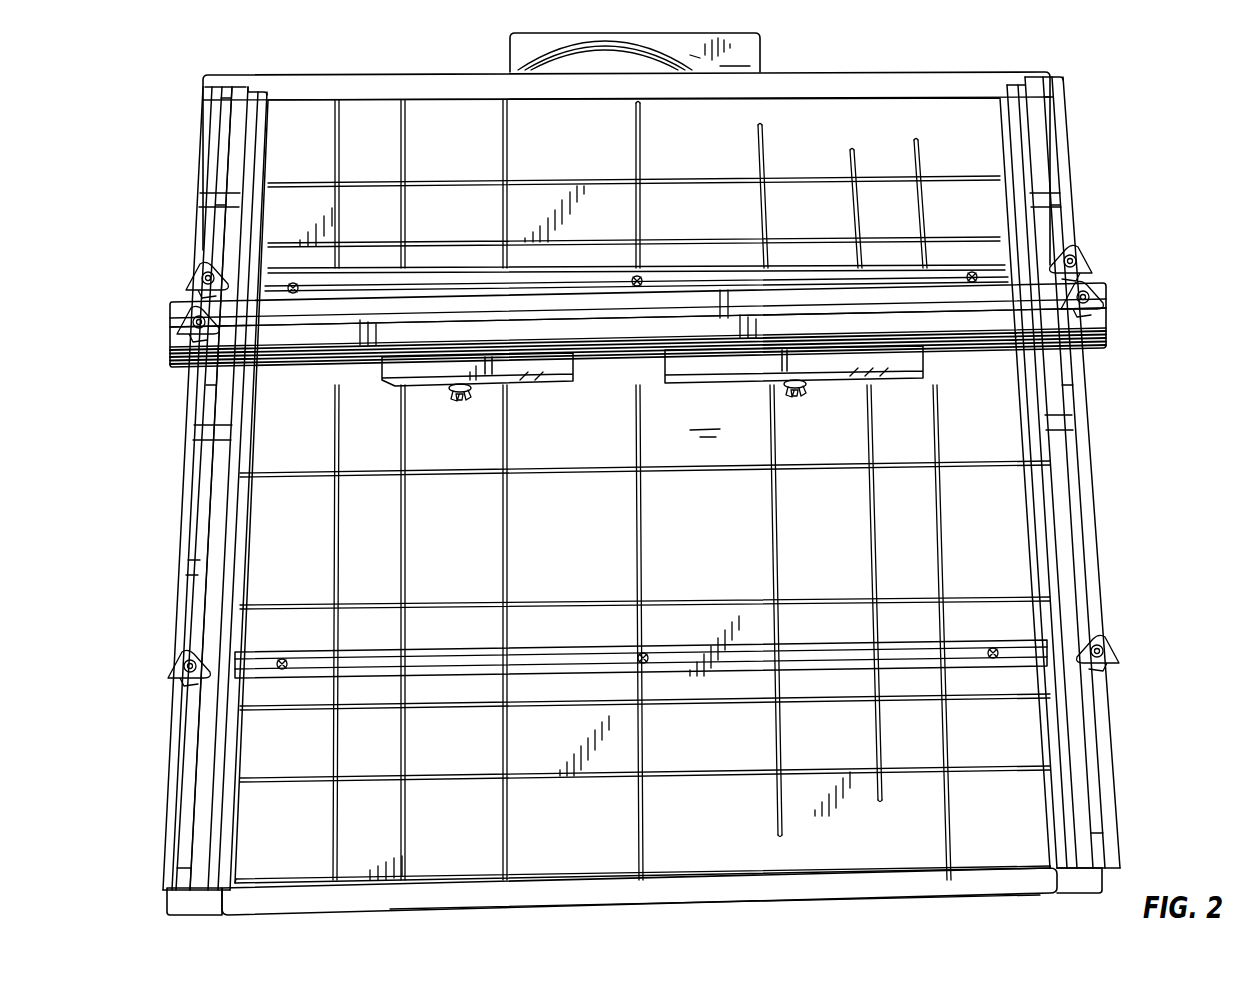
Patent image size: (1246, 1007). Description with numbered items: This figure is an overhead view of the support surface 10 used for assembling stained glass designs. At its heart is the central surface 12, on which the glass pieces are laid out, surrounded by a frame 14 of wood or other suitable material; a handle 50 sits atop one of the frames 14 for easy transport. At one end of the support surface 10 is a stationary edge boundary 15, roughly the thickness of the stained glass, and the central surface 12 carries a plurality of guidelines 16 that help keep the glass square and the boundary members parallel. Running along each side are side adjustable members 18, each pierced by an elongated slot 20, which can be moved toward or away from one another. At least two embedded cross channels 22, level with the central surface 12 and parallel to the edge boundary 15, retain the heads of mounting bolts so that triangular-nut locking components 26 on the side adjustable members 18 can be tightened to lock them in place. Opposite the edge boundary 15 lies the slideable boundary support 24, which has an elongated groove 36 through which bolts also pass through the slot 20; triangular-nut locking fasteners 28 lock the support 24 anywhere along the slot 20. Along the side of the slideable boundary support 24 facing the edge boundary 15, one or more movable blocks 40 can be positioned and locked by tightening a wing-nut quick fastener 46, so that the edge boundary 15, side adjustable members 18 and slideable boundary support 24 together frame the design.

The support surface 10 is at (1114, 170).
The central surface 12 is at (458, 541).
The frame 14 is at (470, 86).
The edge boundary 15 is at (992, 892).
The guidelines 16 is at (937, 462).
The side adjustable members 18 is at (175, 768).
The elongated slot 20 is at (205, 396).
The embedded cross channels 22 is at (878, 642).
The slideable boundary support 24 is at (175, 315).
The locking components 26 is at (195, 265).
The locking fasteners 28 is at (210, 325).
The elongated groove 36 is at (983, 308).
The movable blocks 40 is at (568, 365).
The quick fastener 46 is at (463, 396).
The handle 50 is at (752, 50).